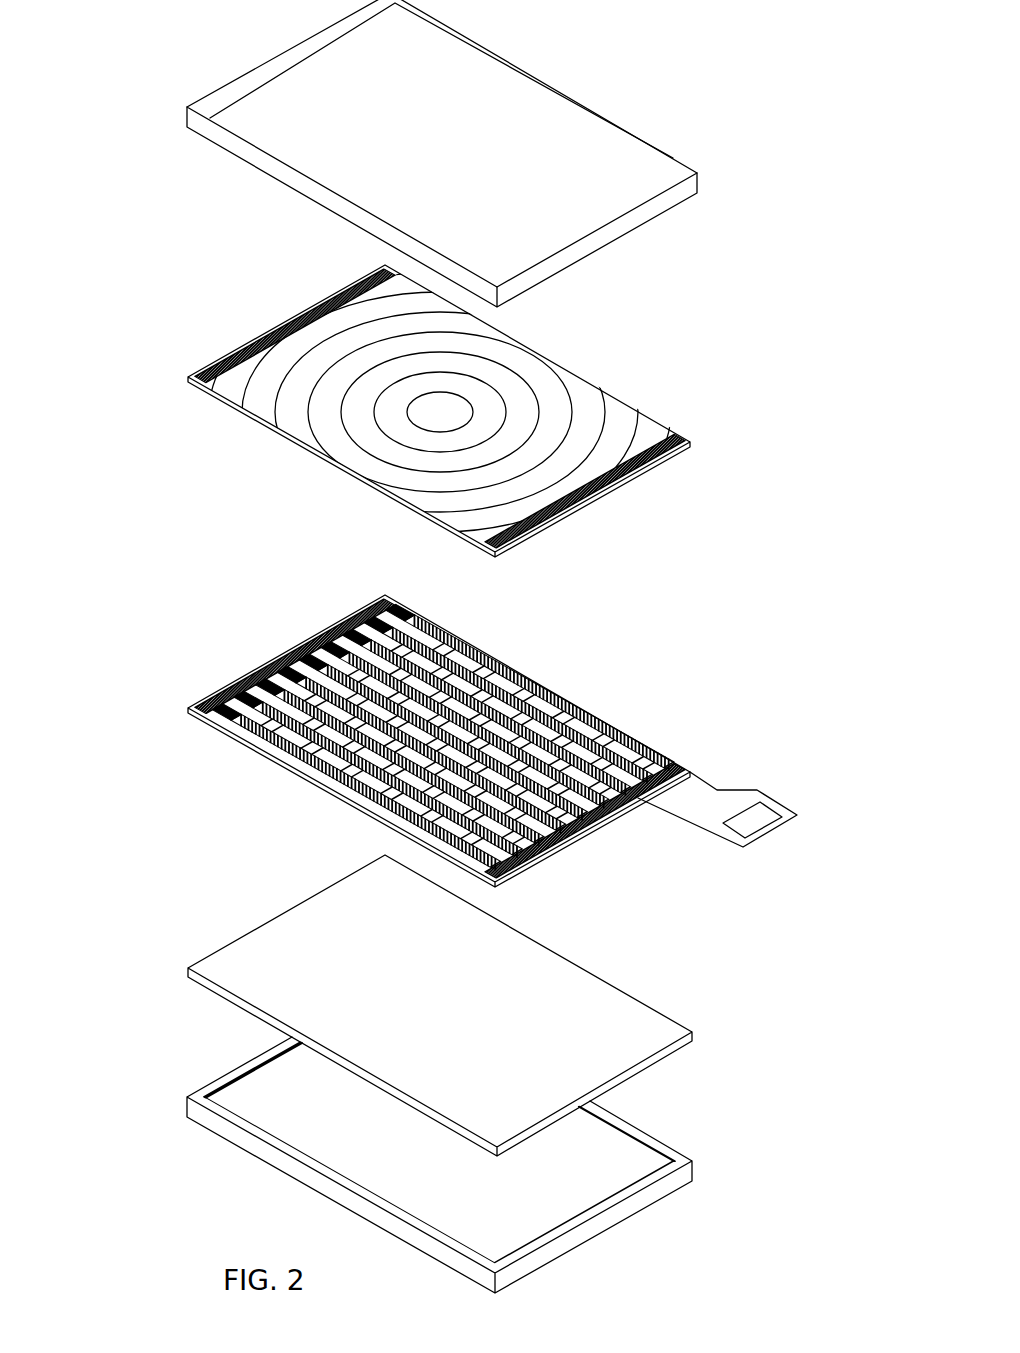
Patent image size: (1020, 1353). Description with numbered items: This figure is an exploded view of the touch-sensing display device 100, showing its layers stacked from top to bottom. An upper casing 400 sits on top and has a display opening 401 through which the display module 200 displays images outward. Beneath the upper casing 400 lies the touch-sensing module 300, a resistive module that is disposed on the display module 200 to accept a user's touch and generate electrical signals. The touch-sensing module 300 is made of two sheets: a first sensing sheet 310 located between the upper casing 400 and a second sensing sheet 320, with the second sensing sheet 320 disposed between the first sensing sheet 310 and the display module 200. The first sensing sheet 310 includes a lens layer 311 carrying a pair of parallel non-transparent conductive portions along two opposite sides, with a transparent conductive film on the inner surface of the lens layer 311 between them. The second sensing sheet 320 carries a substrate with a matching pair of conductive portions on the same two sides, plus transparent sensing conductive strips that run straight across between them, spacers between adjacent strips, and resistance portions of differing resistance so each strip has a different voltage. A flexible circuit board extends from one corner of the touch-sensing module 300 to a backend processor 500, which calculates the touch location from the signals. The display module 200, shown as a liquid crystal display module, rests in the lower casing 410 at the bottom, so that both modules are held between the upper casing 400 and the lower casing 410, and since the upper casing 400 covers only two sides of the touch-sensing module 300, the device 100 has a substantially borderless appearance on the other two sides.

The touch-sensing display device 100 is at (718, 34).
The display module 200 is at (213, 943).
The touch-sensing module 300 is at (108, 305).
The first sensing sheet 310 is at (213, 352).
The lens layer 311 is at (287, 408).
The second sensing sheet 320 is at (213, 682).
The upper casing 400 is at (210, 83).
The display opening 401 is at (582, 123).
The lower casing 410 is at (212, 1070).
The backend processor 500 is at (770, 825).